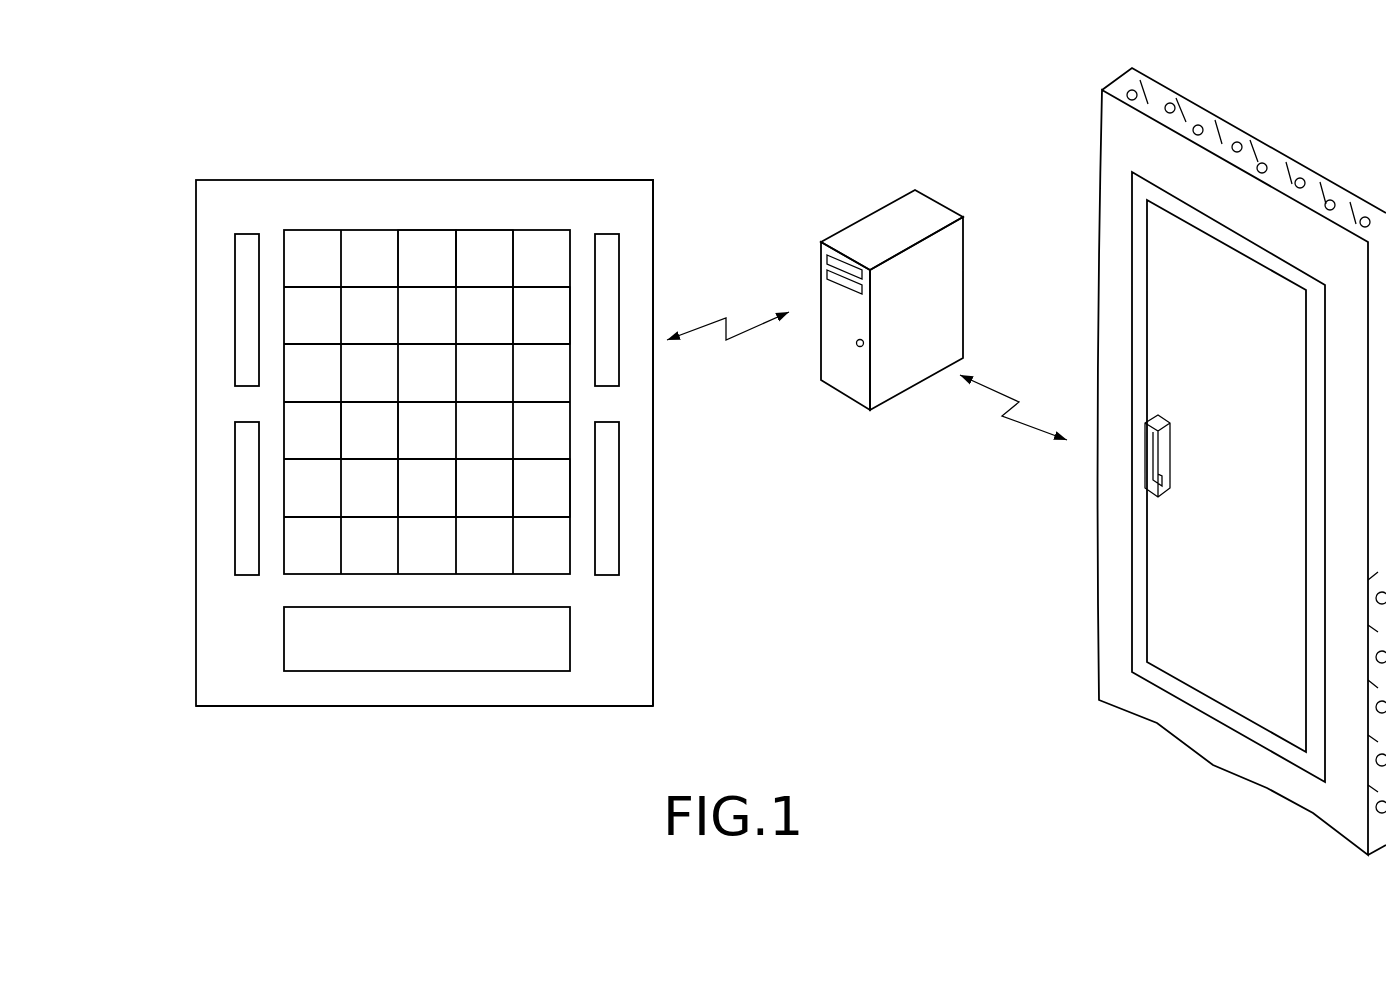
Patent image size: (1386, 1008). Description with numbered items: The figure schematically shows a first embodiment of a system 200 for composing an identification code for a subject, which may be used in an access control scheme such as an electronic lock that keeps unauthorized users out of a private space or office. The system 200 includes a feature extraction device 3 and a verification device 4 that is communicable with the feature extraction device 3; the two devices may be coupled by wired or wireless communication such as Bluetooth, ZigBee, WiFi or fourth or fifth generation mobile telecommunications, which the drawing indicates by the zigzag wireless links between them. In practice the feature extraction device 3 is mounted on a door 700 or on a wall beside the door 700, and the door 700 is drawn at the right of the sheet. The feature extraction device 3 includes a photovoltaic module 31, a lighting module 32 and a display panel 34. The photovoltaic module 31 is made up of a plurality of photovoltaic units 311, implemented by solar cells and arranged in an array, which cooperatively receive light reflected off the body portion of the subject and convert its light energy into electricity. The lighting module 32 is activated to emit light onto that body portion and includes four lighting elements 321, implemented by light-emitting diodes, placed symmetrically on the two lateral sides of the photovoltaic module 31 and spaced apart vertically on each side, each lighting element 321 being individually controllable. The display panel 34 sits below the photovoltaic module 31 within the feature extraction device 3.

The system 200 is at (244, 173).
The feature extraction device 3 is at (247, 714).
The photovoltaic module 31 is at (376, 225).
The photovoltaic units 311 is at (543, 318).
The lighting module 32 is at (614, 213).
The lighting elements 321 is at (245, 324).
The display panel 34 is at (530, 645).
The verification device 4 is at (884, 207).
The door 700 is at (1186, 306).